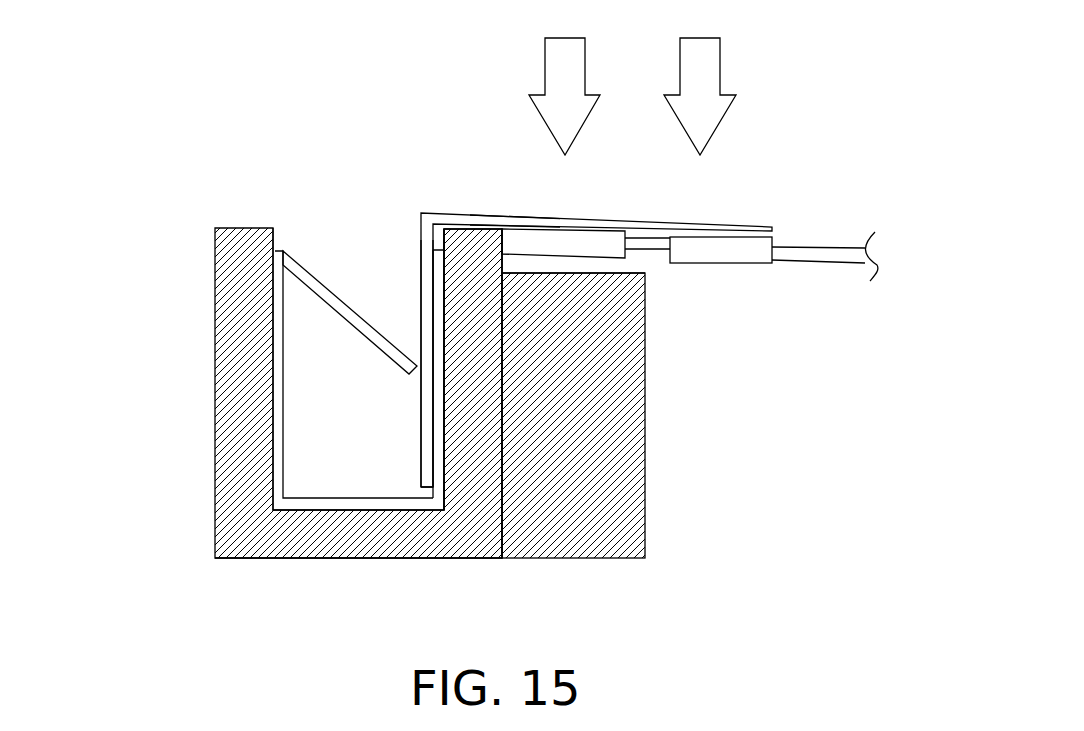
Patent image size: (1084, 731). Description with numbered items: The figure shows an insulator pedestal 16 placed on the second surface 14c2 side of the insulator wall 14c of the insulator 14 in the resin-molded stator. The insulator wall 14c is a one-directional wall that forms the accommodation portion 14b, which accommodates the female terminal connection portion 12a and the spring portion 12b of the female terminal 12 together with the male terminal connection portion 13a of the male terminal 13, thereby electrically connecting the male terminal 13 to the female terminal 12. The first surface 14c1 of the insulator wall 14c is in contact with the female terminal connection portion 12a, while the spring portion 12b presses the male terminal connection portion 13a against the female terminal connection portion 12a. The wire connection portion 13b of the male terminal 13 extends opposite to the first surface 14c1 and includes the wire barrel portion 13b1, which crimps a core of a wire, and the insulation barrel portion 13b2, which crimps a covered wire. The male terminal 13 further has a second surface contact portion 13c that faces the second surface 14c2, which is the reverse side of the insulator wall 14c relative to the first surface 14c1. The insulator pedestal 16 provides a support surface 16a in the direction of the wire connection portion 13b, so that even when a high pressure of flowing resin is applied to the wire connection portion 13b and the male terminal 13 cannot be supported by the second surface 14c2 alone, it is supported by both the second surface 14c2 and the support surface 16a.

The female terminal 12 is at (271, 374).
The female terminal connection portion 12a is at (438, 403).
The spring portion 12b is at (340, 307).
The male terminal 13 is at (627, 267).
The male terminal connection portion 13a is at (425, 395).
The wire connection portion 13b is at (722, 237).
The wire barrel portion 13b1 is at (610, 245).
The insulation barrel portion 13b2 is at (758, 285).
The second surface contact portion 13c is at (502, 240).
The insulator 14 is at (400, 364).
The accommodation portion 14b is at (358, 233).
The insulator wall 14c is at (484, 432).
The first surface 14c1 is at (445, 455).
The second surface 14c2 is at (503, 392).
The insulator pedestal 16 is at (689, 415).
The support surface 16a is at (565, 273).